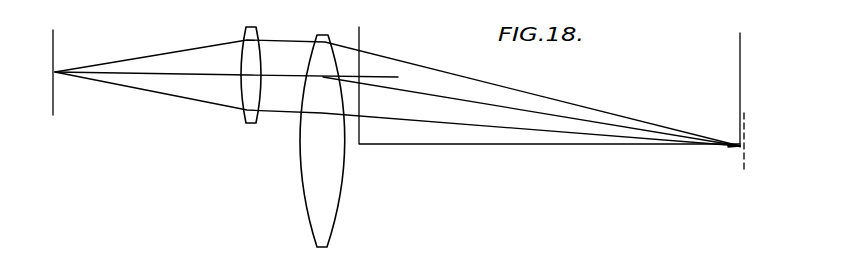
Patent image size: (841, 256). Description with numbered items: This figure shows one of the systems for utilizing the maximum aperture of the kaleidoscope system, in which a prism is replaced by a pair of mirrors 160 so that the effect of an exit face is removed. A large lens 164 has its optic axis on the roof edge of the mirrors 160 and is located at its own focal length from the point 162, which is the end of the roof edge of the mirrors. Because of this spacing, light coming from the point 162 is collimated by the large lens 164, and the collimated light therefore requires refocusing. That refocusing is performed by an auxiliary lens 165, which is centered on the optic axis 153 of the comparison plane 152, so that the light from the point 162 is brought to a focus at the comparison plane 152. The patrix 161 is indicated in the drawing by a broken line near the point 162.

The comparison plane 152 is at (55, 45).
The optic axis 153 is at (172, 73).
The auxiliary lens 165 is at (242, 115).
The large lens 164 is at (305, 168).
The pair of mirrors 160 is at (470, 133).
The patrix 161 is at (748, 145).
The end of the roof edge of the mirrors 162 is at (737, 148).